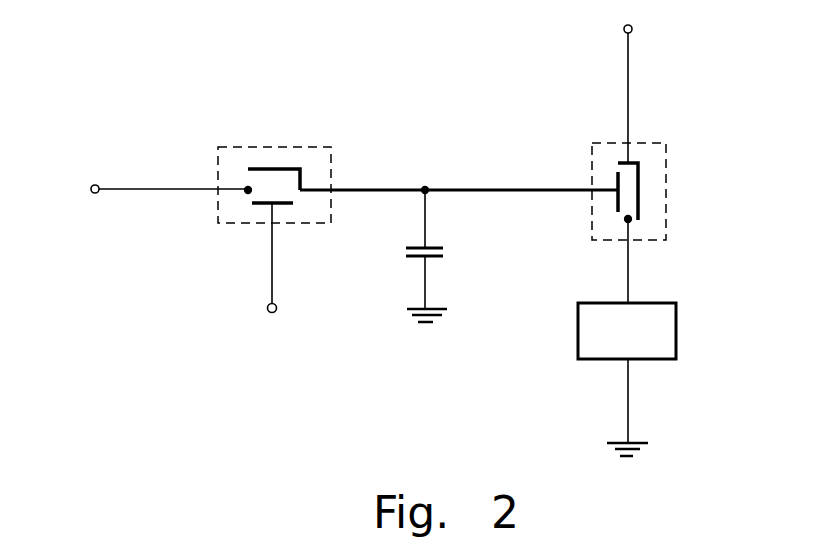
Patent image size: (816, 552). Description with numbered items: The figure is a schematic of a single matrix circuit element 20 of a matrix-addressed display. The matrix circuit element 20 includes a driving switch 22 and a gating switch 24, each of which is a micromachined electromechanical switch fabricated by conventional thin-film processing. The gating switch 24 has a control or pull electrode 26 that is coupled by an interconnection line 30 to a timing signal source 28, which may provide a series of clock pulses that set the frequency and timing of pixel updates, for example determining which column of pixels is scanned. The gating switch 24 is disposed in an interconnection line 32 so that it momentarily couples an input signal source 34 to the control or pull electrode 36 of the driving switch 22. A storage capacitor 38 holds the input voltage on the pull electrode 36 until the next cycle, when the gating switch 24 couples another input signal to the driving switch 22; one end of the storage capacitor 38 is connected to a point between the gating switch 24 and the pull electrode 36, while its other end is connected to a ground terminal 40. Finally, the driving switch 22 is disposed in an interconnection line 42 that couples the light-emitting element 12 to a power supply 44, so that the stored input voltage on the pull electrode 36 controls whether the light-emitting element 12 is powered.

The light-emitting element 12 is at (676, 333).
The matrix circuit element 20 is at (370, 110).
The driving switch 22 is at (666, 168).
The gating switch 24 is at (243, 146).
The pull electrode 26 is at (285, 205).
The timing signal source 28 is at (269, 315).
The interconnection line 30 is at (271, 272).
The interconnection line 32 is at (174, 189).
The input signal source 34 is at (98, 185).
The pull electrode 36 is at (617, 180).
The storage capacitor 38 is at (438, 246).
The ground terminal 40 is at (425, 323).
The interconnection line 42 is at (628, 88).
The power supply 44 is at (632, 27).